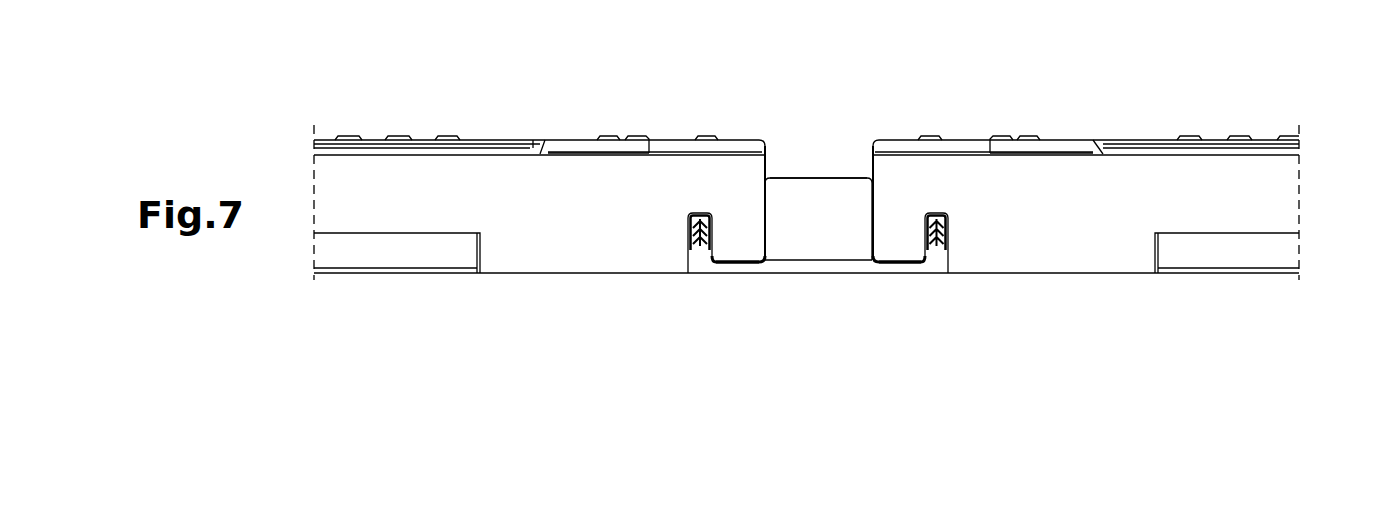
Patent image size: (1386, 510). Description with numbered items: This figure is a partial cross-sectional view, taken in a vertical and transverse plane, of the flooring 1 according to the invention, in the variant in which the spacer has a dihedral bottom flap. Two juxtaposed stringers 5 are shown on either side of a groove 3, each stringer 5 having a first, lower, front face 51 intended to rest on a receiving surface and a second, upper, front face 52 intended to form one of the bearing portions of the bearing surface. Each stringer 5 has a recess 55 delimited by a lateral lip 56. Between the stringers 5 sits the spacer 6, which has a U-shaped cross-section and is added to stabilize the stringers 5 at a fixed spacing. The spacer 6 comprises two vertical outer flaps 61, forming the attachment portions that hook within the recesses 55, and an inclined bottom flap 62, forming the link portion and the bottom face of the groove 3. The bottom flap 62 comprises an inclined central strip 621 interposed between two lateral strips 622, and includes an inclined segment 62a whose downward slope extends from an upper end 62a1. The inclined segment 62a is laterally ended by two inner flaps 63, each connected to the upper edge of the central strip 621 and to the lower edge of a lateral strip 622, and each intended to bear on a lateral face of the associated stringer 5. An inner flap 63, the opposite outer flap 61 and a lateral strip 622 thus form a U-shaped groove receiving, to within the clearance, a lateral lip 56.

The flooring 1 is at (1226, 129).
The groove 3 is at (813, 138).
The stringer 5 is at (806, 162).
The second, upper, front face 52 is at (557, 138).
The spacer 6 is at (818, 297).
The bottom flap 62 is at (837, 274).
The inclined segment 62a is at (838, 200).
The central strip 621 is at (778, 123).
The upper end 62a1 is at (793, 177).
The lateral strip 622 is at (730, 272).
The inner flap 63 is at (763, 208).
The first, lower, front face 51 is at (461, 275).
The outer flap 61 is at (819, 291).
The recess 55 is at (701, 275).
The lateral lip 56 is at (749, 240).